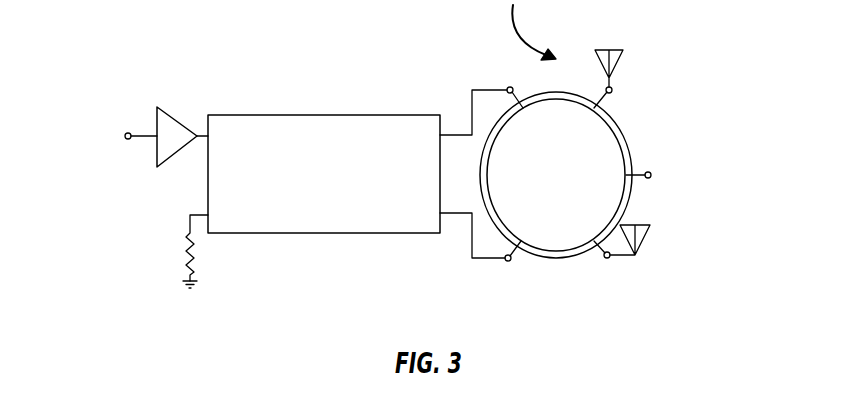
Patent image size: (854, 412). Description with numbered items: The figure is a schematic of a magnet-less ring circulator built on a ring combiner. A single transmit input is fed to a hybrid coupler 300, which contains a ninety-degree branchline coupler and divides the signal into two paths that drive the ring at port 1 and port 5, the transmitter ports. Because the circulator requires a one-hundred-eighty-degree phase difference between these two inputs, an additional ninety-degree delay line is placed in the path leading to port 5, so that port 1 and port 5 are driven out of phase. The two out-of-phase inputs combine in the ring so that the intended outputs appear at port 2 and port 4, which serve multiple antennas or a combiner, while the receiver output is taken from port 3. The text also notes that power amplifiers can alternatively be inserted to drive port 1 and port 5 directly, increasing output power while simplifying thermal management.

The hybrid coupler 300 is at (306, 91).
The port 1 is at (519, 90).
The port 2 is at (601, 79).
The port 3 is at (641, 159).
The port 4 is at (617, 256).
The port 5 is at (518, 264).